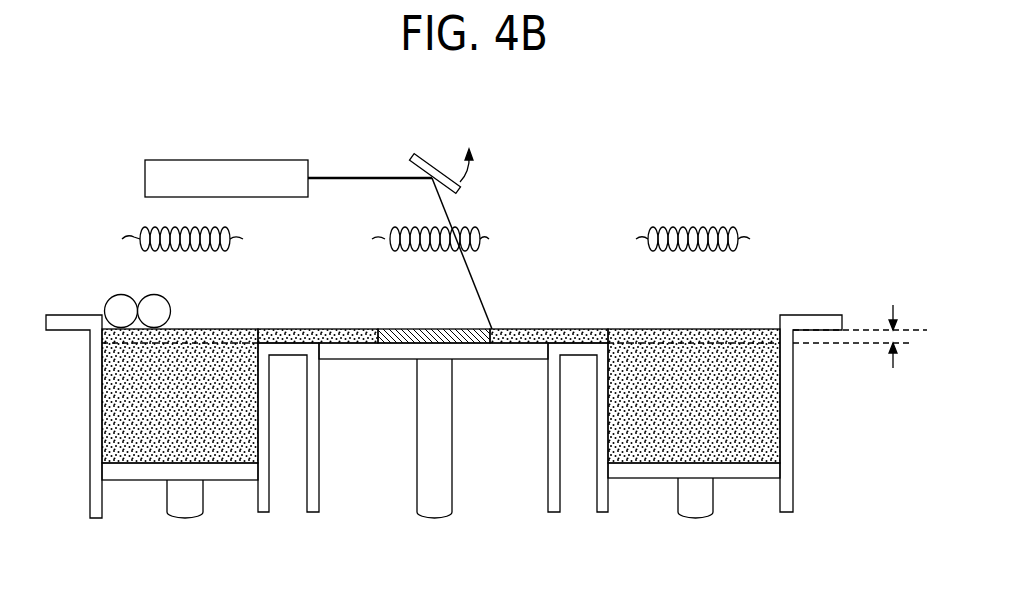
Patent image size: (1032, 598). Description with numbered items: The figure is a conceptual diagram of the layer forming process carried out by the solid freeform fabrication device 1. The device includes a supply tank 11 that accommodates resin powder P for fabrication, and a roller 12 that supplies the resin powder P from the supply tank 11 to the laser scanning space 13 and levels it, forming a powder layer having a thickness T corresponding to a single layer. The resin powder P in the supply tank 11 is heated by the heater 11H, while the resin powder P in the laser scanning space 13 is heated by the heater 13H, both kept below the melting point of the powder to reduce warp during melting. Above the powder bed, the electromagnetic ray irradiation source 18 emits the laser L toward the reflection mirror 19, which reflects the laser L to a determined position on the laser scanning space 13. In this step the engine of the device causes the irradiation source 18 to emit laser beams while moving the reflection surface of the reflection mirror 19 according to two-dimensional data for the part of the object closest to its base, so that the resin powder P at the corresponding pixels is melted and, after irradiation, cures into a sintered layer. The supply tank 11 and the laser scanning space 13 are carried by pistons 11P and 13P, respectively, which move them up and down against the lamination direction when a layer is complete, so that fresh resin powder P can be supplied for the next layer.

The solid freeform fabrication device 1 is at (888, 140).
The supply tank 11 is at (240, 301).
The heater 11H is at (133, 240).
The piston 11P is at (203, 513).
The roller 12 is at (98, 293).
The laser scanning space 13 is at (512, 290).
The heater 13H is at (378, 238).
The piston 13P is at (452, 513).
The electromagnetic ray irradiation source 18 is at (270, 160).
The reflection mirror 19 is at (437, 167).
The laser L is at (357, 178).
The resin powder P is at (721, 329).
The thickness T is at (861, 336).